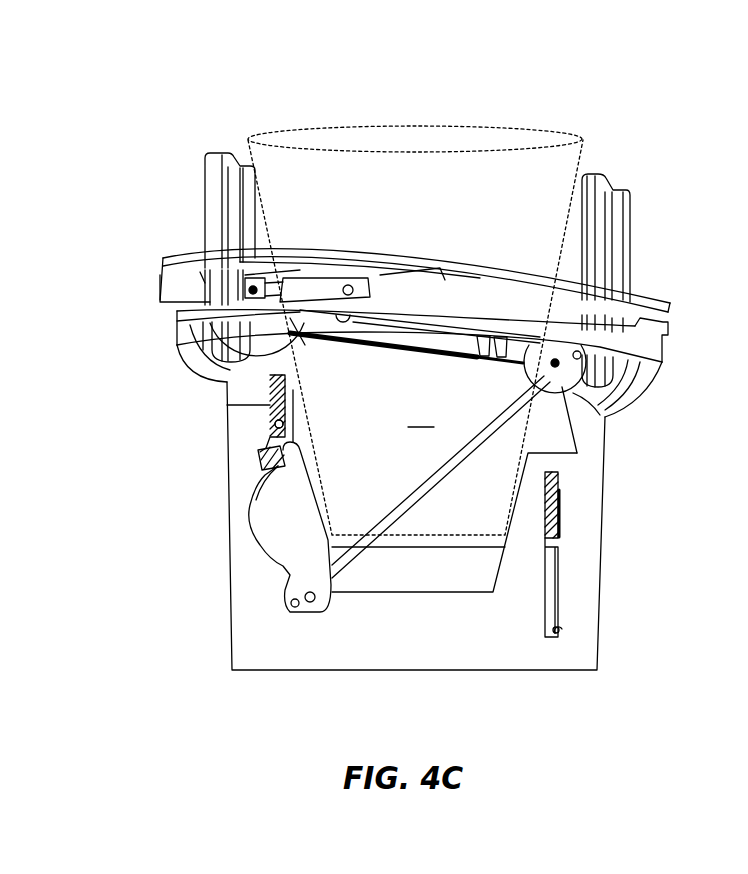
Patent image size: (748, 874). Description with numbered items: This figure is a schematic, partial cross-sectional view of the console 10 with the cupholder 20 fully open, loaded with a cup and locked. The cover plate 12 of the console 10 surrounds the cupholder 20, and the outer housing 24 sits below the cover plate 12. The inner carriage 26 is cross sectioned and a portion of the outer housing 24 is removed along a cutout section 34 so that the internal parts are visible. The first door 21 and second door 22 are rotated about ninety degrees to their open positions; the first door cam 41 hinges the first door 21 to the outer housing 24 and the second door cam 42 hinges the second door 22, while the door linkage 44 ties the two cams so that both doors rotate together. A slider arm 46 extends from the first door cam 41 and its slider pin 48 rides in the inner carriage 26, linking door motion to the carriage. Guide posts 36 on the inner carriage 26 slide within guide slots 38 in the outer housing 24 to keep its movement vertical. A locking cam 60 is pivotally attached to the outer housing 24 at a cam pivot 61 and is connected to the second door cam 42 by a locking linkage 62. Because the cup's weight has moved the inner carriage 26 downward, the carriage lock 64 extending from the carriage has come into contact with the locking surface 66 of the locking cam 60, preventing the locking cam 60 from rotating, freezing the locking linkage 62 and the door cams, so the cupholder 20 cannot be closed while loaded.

The console assembly 10 is at (111, 210).
The cover plate 12 is at (187, 260).
The cupholder assembly 20 is at (465, 92).
The first door 21 is at (217, 185).
The second door 22 is at (624, 209).
The outer housing 24 is at (248, 604).
The inner carriage 26 is at (444, 281).
The cutout section 34 is at (503, 531).
The guide posts 36 is at (270, 383).
The guide slots 38 is at (284, 425).
The first door cam 41 is at (255, 324).
The second door cam 42 is at (604, 428).
The door linkage 44 is at (506, 335).
The slider arm 46 is at (334, 286).
The slider pin 48 is at (350, 287).
The locking cam 60 is at (328, 520).
The cam pivot 61 is at (313, 604).
The locking linkage 62 is at (436, 476).
The carriage lock 64 is at (259, 454).
The locking surface 66 is at (262, 473).